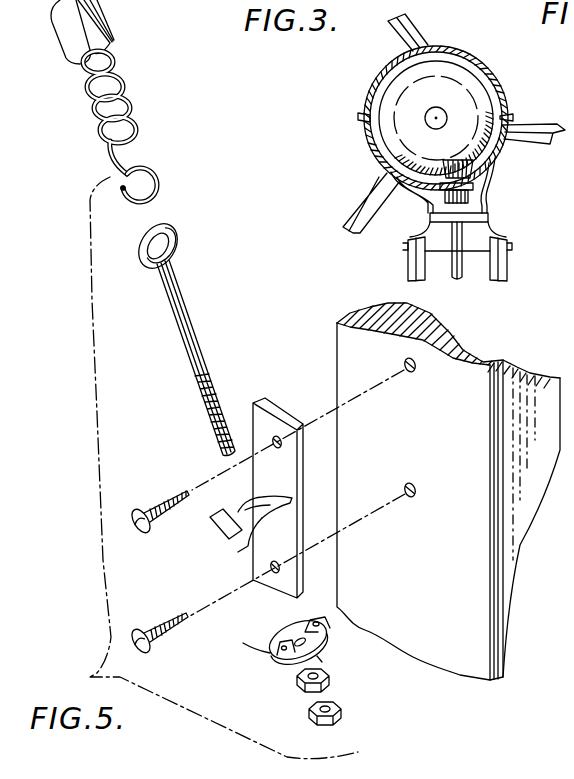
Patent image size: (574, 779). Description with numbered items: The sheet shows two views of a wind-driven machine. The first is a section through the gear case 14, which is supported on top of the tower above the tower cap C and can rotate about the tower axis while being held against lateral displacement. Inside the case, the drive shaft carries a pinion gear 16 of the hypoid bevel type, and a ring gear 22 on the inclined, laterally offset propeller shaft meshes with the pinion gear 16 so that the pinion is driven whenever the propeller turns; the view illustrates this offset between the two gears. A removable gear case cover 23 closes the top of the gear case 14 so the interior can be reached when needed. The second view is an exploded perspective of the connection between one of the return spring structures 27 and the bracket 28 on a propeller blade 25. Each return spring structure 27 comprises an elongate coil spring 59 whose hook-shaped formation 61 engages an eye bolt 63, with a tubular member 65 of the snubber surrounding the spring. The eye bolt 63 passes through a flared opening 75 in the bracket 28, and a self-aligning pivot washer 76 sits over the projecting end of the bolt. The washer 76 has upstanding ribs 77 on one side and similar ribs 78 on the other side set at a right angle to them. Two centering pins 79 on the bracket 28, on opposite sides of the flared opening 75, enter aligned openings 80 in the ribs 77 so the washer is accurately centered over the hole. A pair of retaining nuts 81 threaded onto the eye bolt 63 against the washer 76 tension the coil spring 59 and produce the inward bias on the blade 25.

In FIG. 3, the gear case 14 is at (366, 160).
In FIG. 3, the pinion gear 16 is at (476, 168).
In FIG. 3, the ring gear 22 is at (489, 95).
In FIG. 3, the gear case cover 23 is at (481, 63).
In FIG. 3, the tower cap C is at (492, 235).
In FIG. 5, the propeller blade 25 is at (455, 637).
In FIG. 5, the return spring structure 27 is at (135, 80).
In FIG. 5, the bracket 28 is at (280, 394).
In FIG. 5, the coil spring 59 is at (93, 110).
In FIG. 5, the hook-shaped formation 61 is at (149, 166).
In FIG. 5, the eye bolt 63 is at (184, 305).
In FIG. 5, the tubular member 65 is at (103, 15).
In FIG. 5, the flared opening 75 is at (243, 518).
In FIG. 5, the self-aligning pivot washer 76 is at (292, 660).
In FIG. 5, the upstanding ribs 77 is at (285, 620).
In FIG. 5, the upstanding ribs 78 is at (320, 659).
In FIG. 5, the centering pins 79 is at (250, 533).
In FIG. 5, the aligned openings 80 is at (314, 623).
In FIG. 5, the retaining nuts 81 is at (339, 710).